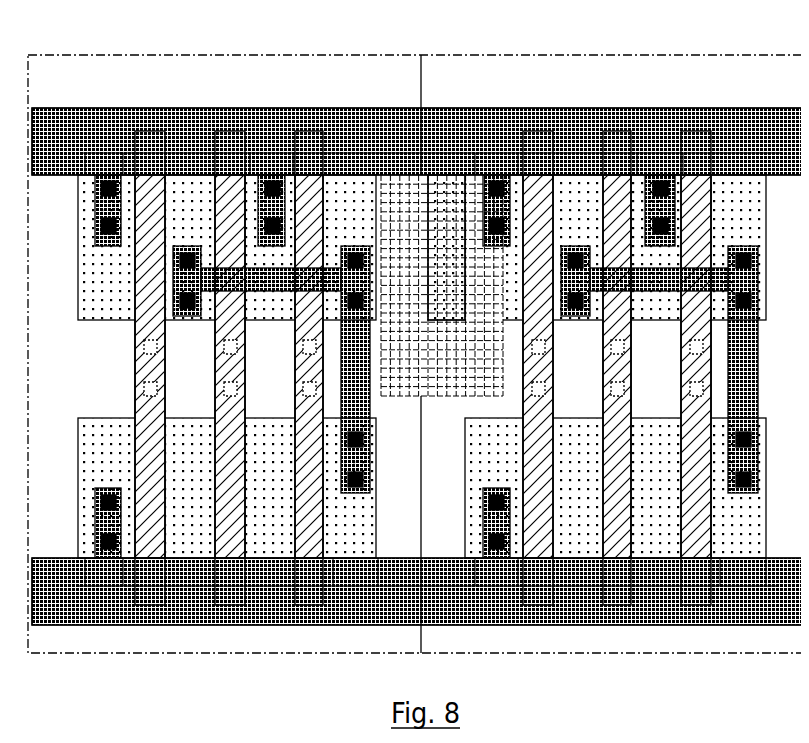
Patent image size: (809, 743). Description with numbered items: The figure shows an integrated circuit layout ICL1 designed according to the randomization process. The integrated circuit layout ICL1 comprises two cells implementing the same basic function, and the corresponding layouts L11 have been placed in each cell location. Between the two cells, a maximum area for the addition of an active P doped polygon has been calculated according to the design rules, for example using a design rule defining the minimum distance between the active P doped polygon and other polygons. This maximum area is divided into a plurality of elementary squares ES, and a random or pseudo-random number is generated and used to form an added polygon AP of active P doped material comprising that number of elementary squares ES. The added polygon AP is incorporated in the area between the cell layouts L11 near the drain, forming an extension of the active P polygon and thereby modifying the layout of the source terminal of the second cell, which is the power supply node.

The integrated circuit layout ICL1 is at (775, 28).
The layout L11 is at (207, 100).
The elementary square ES is at (382, 112).
The added polygon AP is at (439, 130).
The drain region drain is at (395, 153).